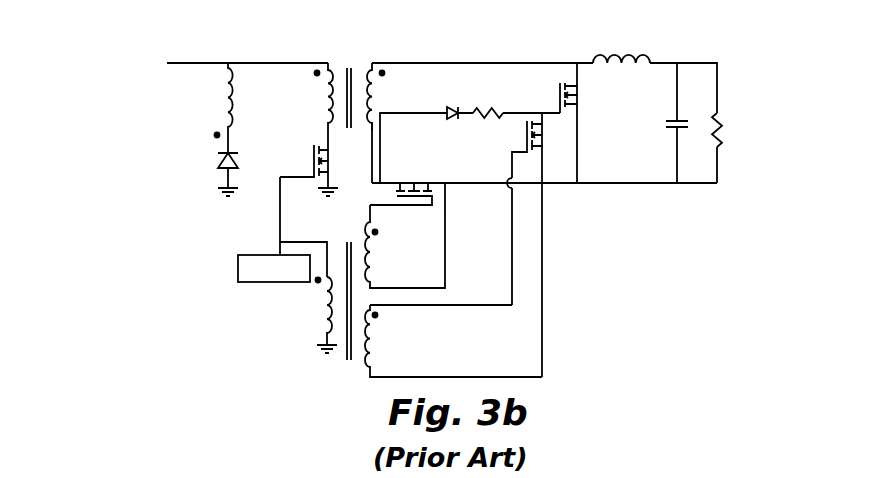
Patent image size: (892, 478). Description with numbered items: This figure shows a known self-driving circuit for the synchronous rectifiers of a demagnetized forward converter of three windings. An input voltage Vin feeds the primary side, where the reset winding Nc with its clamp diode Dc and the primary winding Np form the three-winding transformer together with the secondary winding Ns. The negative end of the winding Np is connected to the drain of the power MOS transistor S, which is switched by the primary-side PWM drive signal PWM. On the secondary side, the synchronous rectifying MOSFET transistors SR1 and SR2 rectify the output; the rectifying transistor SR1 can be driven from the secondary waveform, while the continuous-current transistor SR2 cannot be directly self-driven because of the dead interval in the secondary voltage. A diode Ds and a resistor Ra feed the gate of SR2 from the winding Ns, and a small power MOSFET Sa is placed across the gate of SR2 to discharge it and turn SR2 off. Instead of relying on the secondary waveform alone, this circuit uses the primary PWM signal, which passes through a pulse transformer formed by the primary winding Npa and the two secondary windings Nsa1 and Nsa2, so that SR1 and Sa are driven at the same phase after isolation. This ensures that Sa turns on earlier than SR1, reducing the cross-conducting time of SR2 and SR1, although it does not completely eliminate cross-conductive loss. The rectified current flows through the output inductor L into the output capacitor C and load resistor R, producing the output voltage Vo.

The input voltage Vin is at (183, 48).
The winding Nc is at (214, 108).
The clamp diode Dc is at (242, 173).
The winding Np is at (314, 106).
The power MOS transistor S is at (316, 170).
The PWM drive signal PWM is at (282, 229).
The winding Npa is at (310, 315).
The winding Ns is at (382, 96).
The diode Ds is at (449, 101).
The resistor Ra is at (484, 101).
The small power MOSFET Sa is at (518, 245).
The synchronous rectifying MOSFET transistor SR1 is at (403, 179).
The synchronous rectifying MOSFET transistor SR2 is at (594, 123).
The winding Nsa1 is at (405, 235).
The winding Nsa2 is at (453, 341).
The output inductor L is at (621, 46).
The output voltage Vo is at (710, 49).
The output capacitor C is at (666, 123).
The load resistor R is at (728, 130).